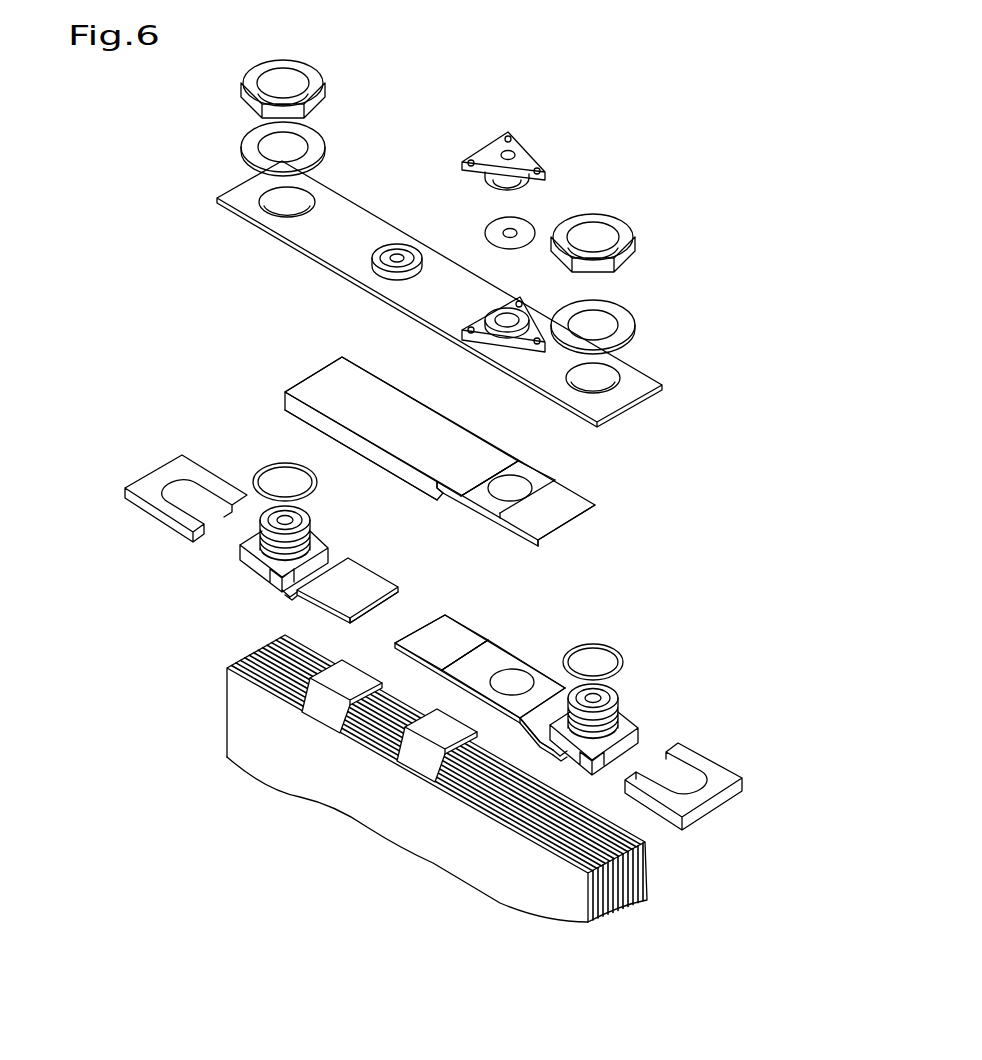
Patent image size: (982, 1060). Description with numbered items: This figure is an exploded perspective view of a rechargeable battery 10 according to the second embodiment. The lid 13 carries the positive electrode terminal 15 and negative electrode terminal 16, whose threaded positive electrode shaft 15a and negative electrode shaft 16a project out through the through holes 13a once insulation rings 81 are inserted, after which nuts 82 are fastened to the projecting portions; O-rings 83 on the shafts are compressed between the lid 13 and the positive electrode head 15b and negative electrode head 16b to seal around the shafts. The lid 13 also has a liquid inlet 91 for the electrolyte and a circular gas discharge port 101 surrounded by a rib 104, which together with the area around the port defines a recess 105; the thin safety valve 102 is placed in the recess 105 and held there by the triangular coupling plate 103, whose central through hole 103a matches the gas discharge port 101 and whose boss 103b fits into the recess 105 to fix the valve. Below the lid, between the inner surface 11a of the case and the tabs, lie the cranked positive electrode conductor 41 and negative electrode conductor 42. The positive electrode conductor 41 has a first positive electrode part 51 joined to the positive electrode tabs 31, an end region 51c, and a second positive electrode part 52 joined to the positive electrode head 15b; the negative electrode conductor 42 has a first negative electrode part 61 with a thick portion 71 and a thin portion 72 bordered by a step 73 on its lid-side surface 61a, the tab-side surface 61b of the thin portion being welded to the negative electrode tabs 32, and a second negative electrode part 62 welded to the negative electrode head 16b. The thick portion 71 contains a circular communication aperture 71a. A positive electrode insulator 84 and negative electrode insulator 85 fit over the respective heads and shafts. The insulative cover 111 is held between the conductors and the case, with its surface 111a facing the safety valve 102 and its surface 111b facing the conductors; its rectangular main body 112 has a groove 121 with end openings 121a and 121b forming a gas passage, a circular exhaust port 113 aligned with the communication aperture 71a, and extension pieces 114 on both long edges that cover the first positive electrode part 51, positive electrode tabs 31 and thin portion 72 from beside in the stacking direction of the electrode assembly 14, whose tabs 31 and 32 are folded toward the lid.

The rechargeable battery 10 is at (723, 157).
The inner surface of the case 11a is at (418, 335).
The lid 13 is at (420, 294).
The through holes 13a is at (292, 212).
The electrode assembly 14 is at (473, 778).
The positive electrode terminal 15 is at (287, 568).
The positive electrode shaft 15a is at (257, 531).
The positive electrode head 15b is at (257, 573).
The negative electrode terminal 16 is at (617, 745).
The negative electrode shaft 16a is at (622, 703).
The negative electrode head 16b is at (623, 770).
The positive electrode tab 31 is at (315, 703).
The negative electrode tab 32 is at (413, 758).
The positive electrode conductor 41 is at (312, 581).
The negative electrode conductor 42 is at (535, 693).
The first positive electrode part 51 is at (364, 601).
The plate end 51c is at (382, 606).
The second positive electrode part 52 is at (282, 590).
The first negative electrode part 61 is at (482, 677).
The surface closer to the lid 61a is at (547, 682).
The surface closer to the negative electrode tab 61b is at (495, 705).
The second negative electrode part 62 is at (540, 750).
The thick portion 71 is at (493, 656).
The communication aperture 71a is at (503, 678).
The thin portion 72 is at (440, 617).
The step 73 is at (440, 662).
The insulation rings 81 is at (318, 138).
The nuts 82 is at (318, 88).
The O-rings 83 is at (272, 468).
The positive electrode insulator 84 is at (150, 463).
The negative electrode insulator 85 is at (727, 807).
The liquid inlet 91 is at (397, 252).
The gas discharge port 101 is at (510, 326).
The safety valve 102 is at (492, 222).
The coupling plate 103 is at (534, 153).
The through hole 103a is at (508, 152).
The boss 103b is at (525, 185).
The rib 104 is at (480, 348).
The recess 105 is at (500, 312).
The cover 111 is at (455, 445).
The surface closer to the safety valve 111a is at (393, 408).
The surface closer to the conductors 111b is at (440, 502).
The main body 112 is at (357, 368).
The exhaust port 113 is at (560, 516).
The extension pieces 114 is at (347, 447).
The groove 121 is at (501, 492).
The opening 121a is at (498, 528).
The opening 121b is at (523, 462).